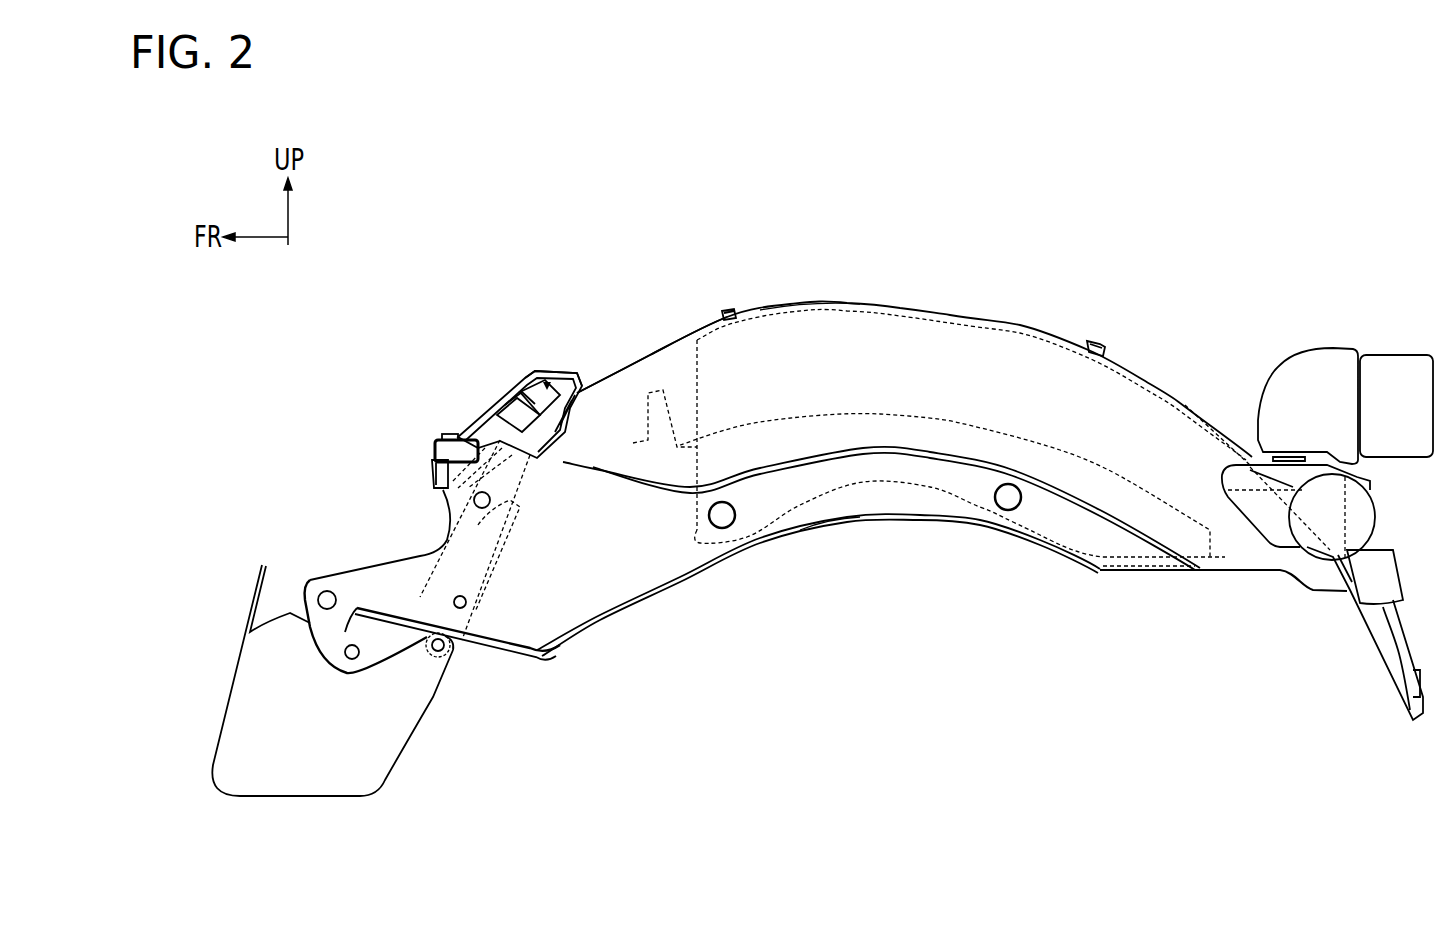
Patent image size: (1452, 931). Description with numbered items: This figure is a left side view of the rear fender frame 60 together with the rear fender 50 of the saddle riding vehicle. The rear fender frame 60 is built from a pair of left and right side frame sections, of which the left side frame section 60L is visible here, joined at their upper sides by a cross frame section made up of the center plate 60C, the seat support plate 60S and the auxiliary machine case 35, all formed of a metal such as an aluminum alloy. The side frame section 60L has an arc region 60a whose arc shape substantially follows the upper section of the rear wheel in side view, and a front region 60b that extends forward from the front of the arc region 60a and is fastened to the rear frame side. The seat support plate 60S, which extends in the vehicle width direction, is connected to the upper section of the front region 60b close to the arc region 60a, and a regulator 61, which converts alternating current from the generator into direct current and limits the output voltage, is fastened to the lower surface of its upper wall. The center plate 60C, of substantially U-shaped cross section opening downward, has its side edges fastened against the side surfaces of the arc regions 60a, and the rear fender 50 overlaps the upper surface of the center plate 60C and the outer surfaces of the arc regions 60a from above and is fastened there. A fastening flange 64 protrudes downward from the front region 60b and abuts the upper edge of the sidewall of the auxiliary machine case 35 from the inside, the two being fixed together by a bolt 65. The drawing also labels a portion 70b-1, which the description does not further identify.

The rear fender 50 is at (1025, 325).
The center plate 60C is at (860, 303).
The upper edge of rear fender front portion 70b-1 is at (580, 403).
The rear fender frame 60 is at (1029, 546).
The side frame section 60L is at (907, 503).
The arc region 60a is at (845, 515).
The front region 60b is at (555, 565).
The fastening flange 64 is at (457, 647).
The bolt 65 is at (450, 650).
The auxiliary machine case 35 is at (288, 799).
The seat support plate 60S is at (507, 390).
The regulator 61 is at (547, 373).